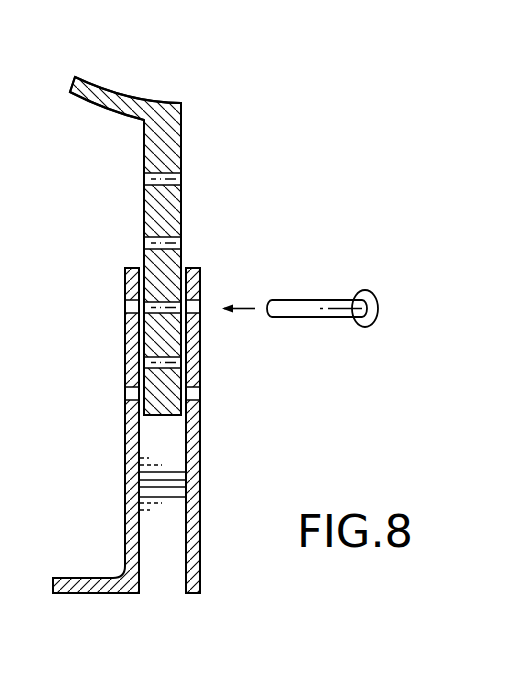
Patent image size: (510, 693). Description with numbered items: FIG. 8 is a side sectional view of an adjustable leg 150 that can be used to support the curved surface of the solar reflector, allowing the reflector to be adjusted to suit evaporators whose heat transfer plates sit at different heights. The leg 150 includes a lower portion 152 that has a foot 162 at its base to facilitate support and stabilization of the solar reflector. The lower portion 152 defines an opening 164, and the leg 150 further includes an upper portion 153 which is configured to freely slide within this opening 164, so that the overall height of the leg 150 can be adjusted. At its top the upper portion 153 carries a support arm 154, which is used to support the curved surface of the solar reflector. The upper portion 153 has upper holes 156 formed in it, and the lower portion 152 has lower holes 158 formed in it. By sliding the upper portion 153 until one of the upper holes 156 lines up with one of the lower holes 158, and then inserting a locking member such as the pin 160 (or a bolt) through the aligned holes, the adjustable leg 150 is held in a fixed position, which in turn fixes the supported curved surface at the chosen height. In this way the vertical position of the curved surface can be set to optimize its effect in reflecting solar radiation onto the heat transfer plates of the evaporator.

The adjustable leg 150 is at (266, 97).
The lower portion 152 is at (210, 461).
The upper portion 153 is at (140, 155).
The support arm 154 is at (107, 91).
The upper holes 156 is at (181, 177).
The lower holes 158 is at (127, 310).
The pin 160 is at (311, 299).
The foot 162 is at (82, 577).
The opening 164 is at (160, 570).